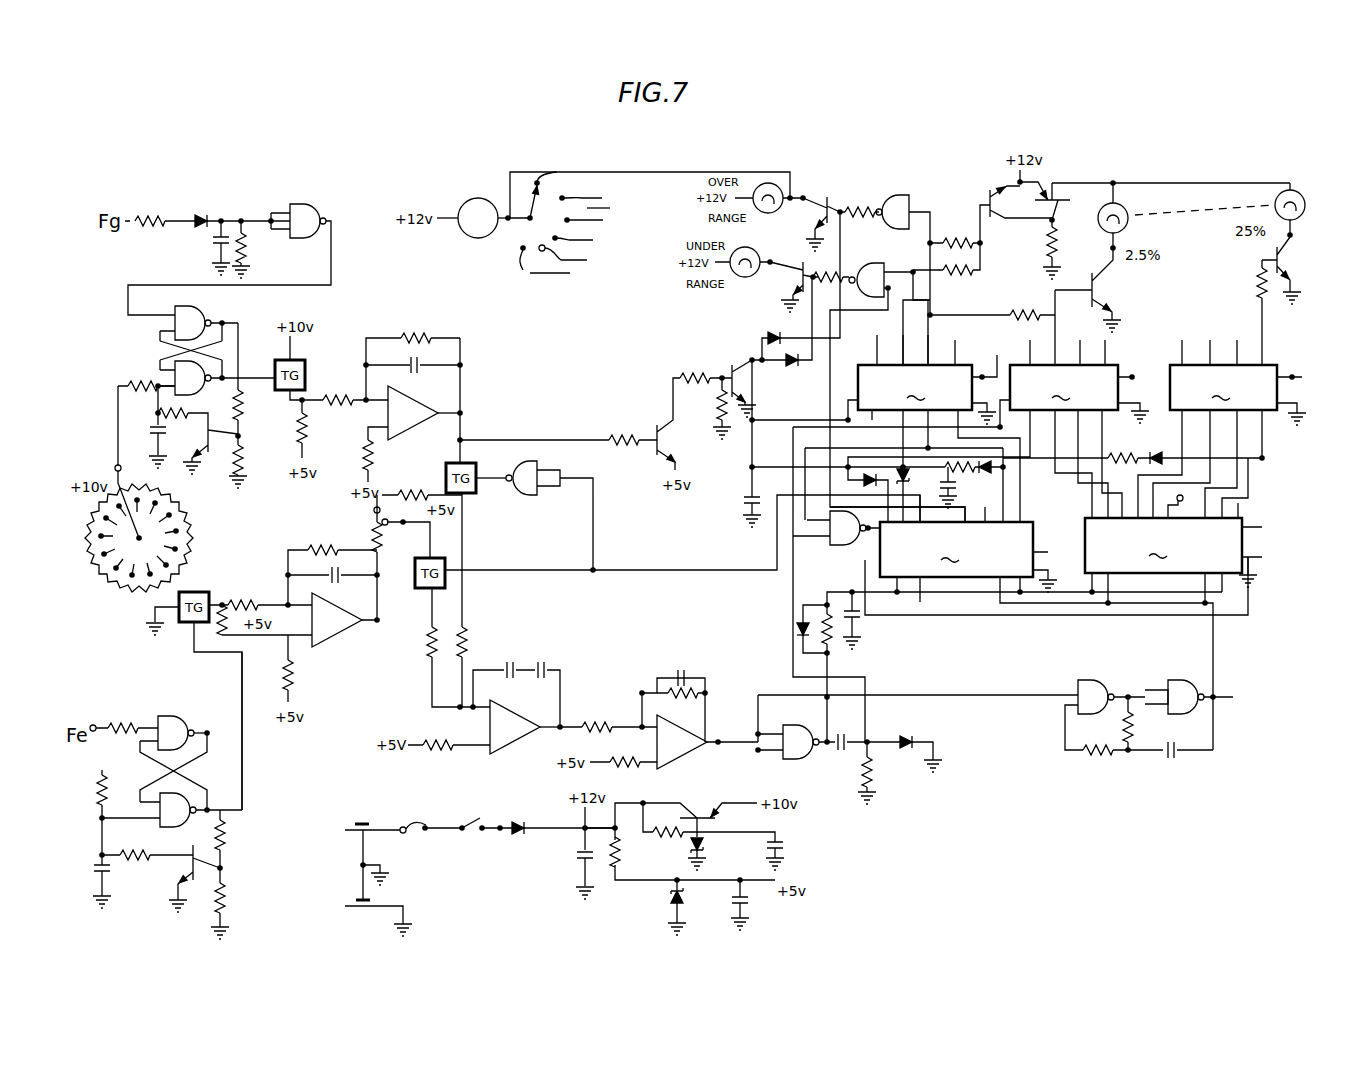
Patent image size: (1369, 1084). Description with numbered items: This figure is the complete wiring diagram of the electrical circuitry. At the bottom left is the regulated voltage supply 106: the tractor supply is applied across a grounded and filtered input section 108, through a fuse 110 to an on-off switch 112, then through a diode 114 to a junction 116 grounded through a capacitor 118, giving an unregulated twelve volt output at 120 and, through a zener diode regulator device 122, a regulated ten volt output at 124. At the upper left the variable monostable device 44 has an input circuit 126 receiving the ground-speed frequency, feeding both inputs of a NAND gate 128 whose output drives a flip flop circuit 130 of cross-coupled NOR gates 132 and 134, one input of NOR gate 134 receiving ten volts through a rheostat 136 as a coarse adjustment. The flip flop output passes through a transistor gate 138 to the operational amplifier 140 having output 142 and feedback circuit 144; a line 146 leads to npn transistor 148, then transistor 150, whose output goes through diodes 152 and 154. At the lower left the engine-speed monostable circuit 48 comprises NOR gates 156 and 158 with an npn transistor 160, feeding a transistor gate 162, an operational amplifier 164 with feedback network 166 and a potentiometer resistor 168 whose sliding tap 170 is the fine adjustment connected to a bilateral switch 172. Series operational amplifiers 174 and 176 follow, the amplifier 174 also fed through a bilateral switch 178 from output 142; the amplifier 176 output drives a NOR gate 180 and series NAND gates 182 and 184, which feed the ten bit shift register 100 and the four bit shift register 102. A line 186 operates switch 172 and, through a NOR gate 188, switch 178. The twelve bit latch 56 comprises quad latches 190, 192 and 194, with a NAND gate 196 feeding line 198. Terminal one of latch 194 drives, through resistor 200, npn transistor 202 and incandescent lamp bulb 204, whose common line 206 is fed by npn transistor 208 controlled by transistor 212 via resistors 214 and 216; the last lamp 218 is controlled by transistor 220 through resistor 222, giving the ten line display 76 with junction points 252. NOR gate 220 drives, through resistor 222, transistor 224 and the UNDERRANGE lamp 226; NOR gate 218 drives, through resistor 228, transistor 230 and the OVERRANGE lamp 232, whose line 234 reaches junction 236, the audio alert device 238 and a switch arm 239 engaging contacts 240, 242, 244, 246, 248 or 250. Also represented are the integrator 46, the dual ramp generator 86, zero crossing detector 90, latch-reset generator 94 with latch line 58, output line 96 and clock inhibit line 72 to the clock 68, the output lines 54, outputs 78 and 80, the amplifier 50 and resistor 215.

The variable monostable device 44 is at (201, 412).
The integrator 46 is at (447, 396).
The monostable circuit 48 is at (178, 795).
The operational amplifier 50 is at (368, 604).
The output lines 54 is at (1285, 442).
The 12 bit latch 56 is at (977, 331).
The latch line 58 is at (868, 720).
The clock 68 is at (1149, 706).
The clock inhibit line 72 is at (947, 698).
The ten line display 76 is at (1205, 251).
The latch output 78 is at (877, 353).
The latch output 80 is at (903, 317).
The dual ramp generator 86 is at (541, 711).
The zero crossing detector 90 is at (711, 729).
The latch-reset generator 94 is at (804, 720).
The output line 96 is at (828, 667).
The ten bit shift register 100 is at (1193, 532).
The four bit shift register 102 is at (1048, 603).
The regulated voltage supply 106 is at (508, 886).
The input section 108 is at (348, 895).
The fuse 110 is at (423, 826).
The on-off switch 112 is at (478, 825).
The diode 114 is at (520, 828).
The junction 116 is at (582, 840).
The capacitor 118 is at (570, 860).
The unregulated twelve volt output 120 is at (614, 817).
The zener diode regulator device 122 is at (746, 862).
The regulated ten volt output 124 is at (726, 807).
The input circuit 126 is at (170, 221).
The NAND gate 128 is at (308, 208).
The flip flop circuit 130 is at (216, 348).
The NOR gate 132 is at (198, 309).
The NOR gate 134 is at (190, 396).
The rheostat 136 is at (194, 532).
The transistor gate 138 is at (306, 362).
The operational amplifier 140 is at (420, 432).
The output 142 is at (460, 413).
The resistance-capacitor feedback circuit 144 is at (420, 335).
The line 146 is at (542, 438).
The npn transistor 148 is at (668, 400).
The npn transistor 150 is at (727, 376).
The diode 152 is at (767, 335).
The diode 154 is at (793, 370).
The NOR gate 156 is at (177, 718).
The NOR gate 158 is at (158, 830).
The npn transistor 160 is at (213, 860).
The transistor gate 162 is at (187, 638).
The operational amplifier 164 is at (360, 635).
The resistance-capacitance feedback network 166 is at (312, 545).
The potentiometer resistor 168 is at (390, 522).
The sliding tap 170 is at (387, 526).
The bilateral switch 172 is at (420, 592).
The operational amplifier 174 is at (490, 723).
The operational amplifier 176 is at (658, 746).
The bilateral switch 178 is at (464, 494).
The NOR gate 180 is at (820, 762).
The NAND gate 182 is at (1087, 692).
The NAND gate 184 is at (1175, 693).
The line 186 is at (625, 571).
The NOR gate 188 is at (542, 488).
The quad latch 190 is at (886, 428).
The quad latch 192 is at (984, 406).
The quad latch 194 is at (1239, 429).
The NAND gate 196 is at (832, 548).
The line 198 is at (865, 560).
The resistor 200 is at (1258, 292).
The npn transistor 202 is at (1293, 263).
The incandescent lamp bulb 204 is at (1306, 187).
The common line 206 is at (1213, 182).
The npn transistor 208 is at (1055, 192).
The transistor 212 is at (987, 187).
The resistor 214 is at (955, 237).
The resistor 215 is at (1050, 245).
The resistor 216 is at (960, 275).
The lamp / NOR gate 218 is at (898, 198).
The transistor / NOR gate 220 is at (865, 262).
The resistor 222 is at (838, 272).
The npn transistor 224 is at (792, 284).
The UNDERRANGE lamp 226 is at (758, 250).
The resistor 228 is at (857, 208).
The npn transistor 230 is at (826, 180).
The OVERRANGE lamp 232 is at (774, 181).
The line 234 is at (652, 172).
The junction 236 is at (497, 210).
The audio alert device 238 is at (478, 240).
The switch arm 239 is at (527, 178).
The fixed contact 240 is at (557, 175).
The fixed contact 242 is at (586, 196).
The fixed contact 244 is at (604, 210).
The fixed contact 246 is at (606, 220).
The fixed contact 248 is at (591, 246).
The fixed contact 250 is at (520, 274).
The junction points 252 is at (1113, 249).